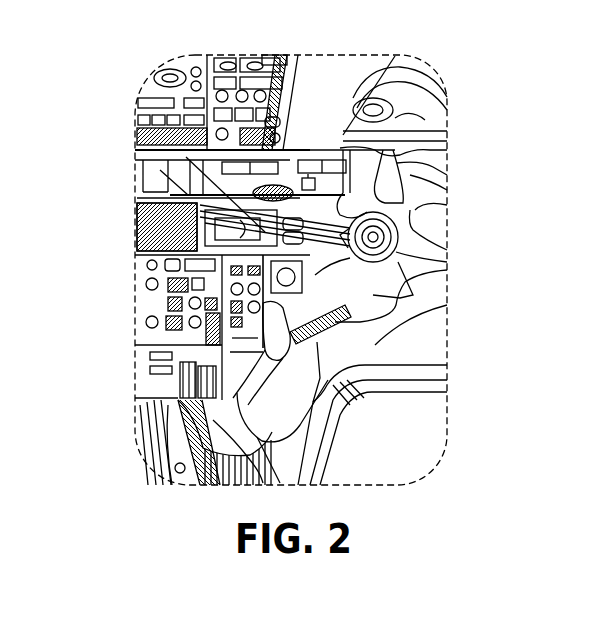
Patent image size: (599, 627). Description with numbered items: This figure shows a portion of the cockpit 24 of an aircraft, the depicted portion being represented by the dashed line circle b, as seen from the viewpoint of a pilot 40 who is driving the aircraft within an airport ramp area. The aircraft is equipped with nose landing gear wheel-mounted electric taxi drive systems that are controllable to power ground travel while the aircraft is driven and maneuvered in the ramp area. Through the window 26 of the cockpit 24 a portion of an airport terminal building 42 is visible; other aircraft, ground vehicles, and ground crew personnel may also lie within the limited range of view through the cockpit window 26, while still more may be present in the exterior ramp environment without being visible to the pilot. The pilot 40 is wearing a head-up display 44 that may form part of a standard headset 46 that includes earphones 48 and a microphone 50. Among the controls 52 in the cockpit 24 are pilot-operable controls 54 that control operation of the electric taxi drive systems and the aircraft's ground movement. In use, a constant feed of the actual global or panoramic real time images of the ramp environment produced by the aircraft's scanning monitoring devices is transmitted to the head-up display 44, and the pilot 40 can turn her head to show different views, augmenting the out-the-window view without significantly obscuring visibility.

The cockpit 24 is at (135, 229).
The window 26 is at (420, 106).
The pilot 40 is at (427, 322).
The airport terminal building 42 is at (298, 72).
The head-up display 44 is at (262, 232).
The headset 46 is at (447, 141).
The earphones 48 is at (410, 225).
The microphone 50 is at (342, 312).
The controls 52 is at (148, 328).
The pilot-operable controls 54 is at (150, 294).
The dashed line circle b is at (447, 440).